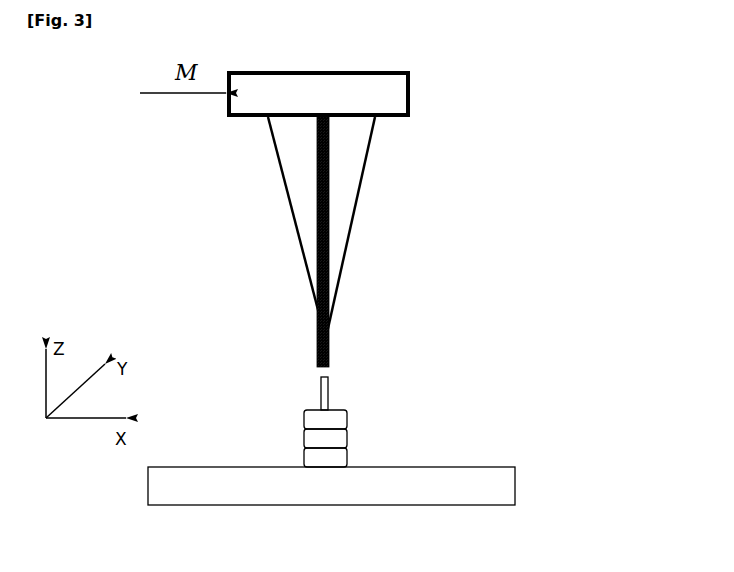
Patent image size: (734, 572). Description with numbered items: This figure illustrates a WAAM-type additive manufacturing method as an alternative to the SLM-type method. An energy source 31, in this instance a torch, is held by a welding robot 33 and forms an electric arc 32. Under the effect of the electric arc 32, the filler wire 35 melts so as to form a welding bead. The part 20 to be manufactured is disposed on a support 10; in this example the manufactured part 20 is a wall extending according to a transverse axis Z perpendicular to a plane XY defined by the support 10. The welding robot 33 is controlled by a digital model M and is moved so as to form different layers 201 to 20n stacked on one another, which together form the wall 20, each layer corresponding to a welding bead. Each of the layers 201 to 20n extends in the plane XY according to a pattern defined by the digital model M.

The support 10 is at (467, 482).
The part 20 is at (405, 422).
The layer 20n is at (350, 420).
The layer 201 is at (369, 448).
The energy source 31 is at (350, 233).
The electric arc 32 is at (317, 378).
The welding robot 33 is at (389, 95).
The filler wire 35 is at (333, 338).